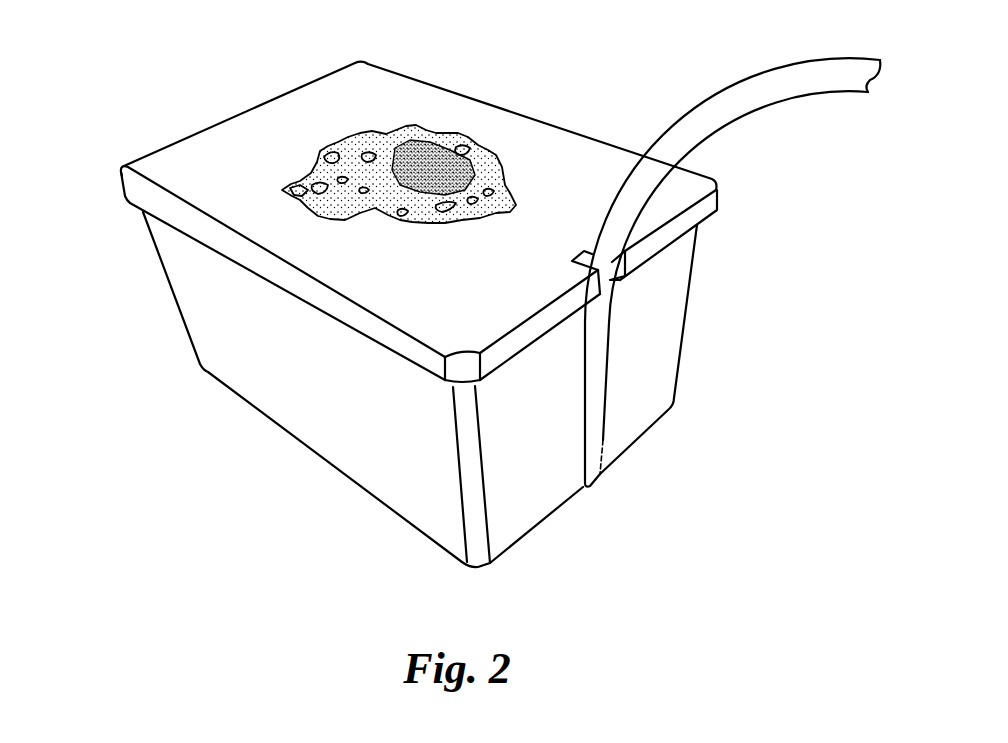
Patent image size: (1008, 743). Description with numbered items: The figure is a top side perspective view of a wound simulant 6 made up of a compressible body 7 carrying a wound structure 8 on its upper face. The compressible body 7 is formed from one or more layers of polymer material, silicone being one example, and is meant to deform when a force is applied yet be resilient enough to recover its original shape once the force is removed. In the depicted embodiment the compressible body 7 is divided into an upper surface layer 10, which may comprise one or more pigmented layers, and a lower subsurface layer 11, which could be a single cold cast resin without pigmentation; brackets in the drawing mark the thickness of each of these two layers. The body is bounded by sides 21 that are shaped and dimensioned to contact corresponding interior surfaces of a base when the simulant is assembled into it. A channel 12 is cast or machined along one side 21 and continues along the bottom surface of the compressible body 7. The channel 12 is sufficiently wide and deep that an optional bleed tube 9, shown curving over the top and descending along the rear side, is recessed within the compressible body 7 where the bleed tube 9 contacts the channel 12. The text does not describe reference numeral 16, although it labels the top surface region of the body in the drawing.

The simulant 6 is at (232, 448).
The compressible body 7 is at (745, 162).
The wound structure 8 is at (443, 117).
The bleed tube 9 is at (772, 75).
The surface layer 10 is at (100, 150).
The subsurface layer 11 is at (133, 212).
The channel 12 is at (598, 445).
The lid top surface 16 is at (233, 137).
The sides 21 is at (300, 87).